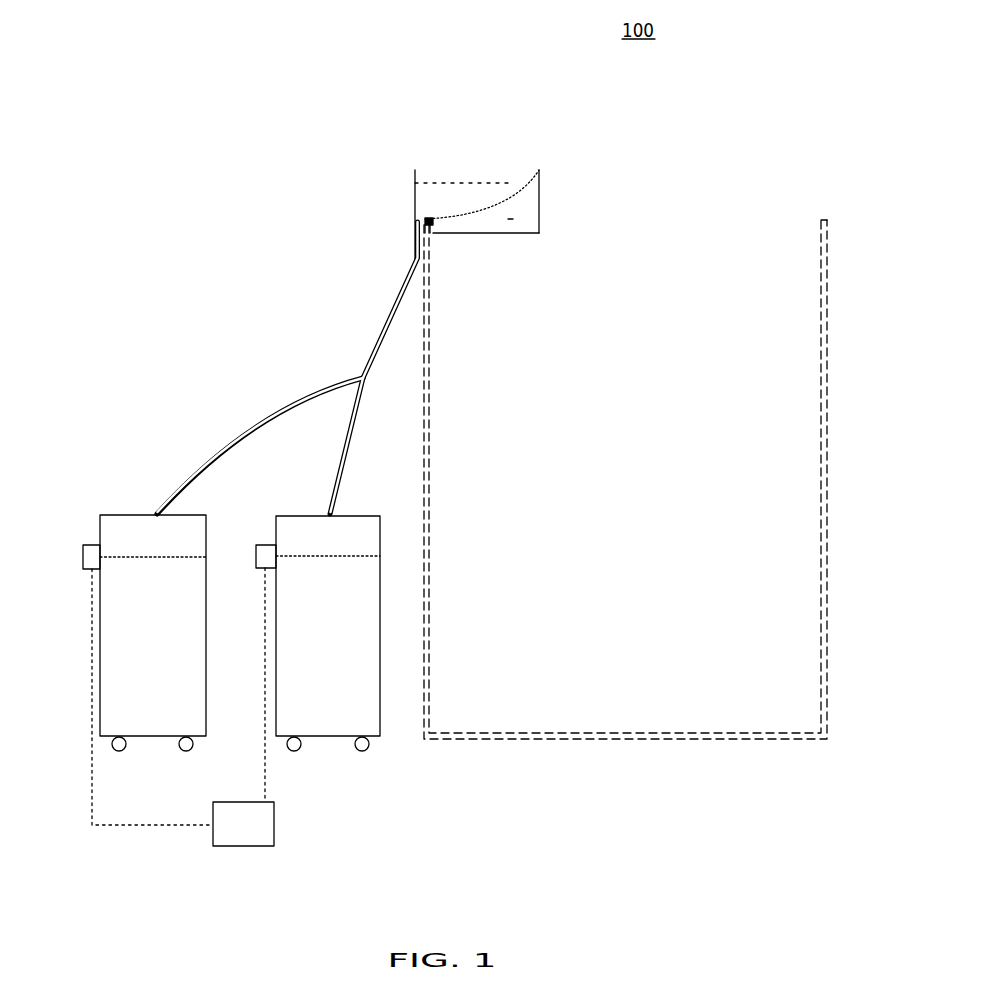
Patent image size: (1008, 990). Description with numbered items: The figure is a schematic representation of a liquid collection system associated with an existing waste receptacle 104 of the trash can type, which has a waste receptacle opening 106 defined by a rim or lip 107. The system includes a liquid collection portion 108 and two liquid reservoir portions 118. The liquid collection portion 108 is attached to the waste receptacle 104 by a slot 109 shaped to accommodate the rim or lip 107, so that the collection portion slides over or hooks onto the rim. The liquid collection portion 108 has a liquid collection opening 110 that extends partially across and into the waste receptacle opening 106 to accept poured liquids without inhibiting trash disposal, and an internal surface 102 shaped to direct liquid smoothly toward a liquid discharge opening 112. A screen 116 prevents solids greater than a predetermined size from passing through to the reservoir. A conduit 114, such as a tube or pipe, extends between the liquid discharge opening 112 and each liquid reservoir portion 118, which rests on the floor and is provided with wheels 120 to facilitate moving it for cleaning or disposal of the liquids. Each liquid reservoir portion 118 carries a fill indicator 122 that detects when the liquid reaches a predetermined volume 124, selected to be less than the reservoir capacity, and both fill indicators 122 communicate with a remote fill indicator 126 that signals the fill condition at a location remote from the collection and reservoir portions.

The internal surface 102 is at (497, 203).
The waste receptacle 104 is at (566, 742).
The waste receptacle opening 106 is at (692, 220).
The rim or lip 107 is at (824, 220).
The liquid collection portion 108 is at (412, 182).
The slot 109 is at (433, 225).
The liquid collection opening 110 is at (450, 170).
The liquid discharge opening 112 is at (415, 225).
The conduit 114 is at (370, 356).
The screen 116 is at (510, 183).
The liquid reservoir portion 118 is at (151, 510).
The wheels 120 is at (121, 752).
The fill indicator 122 is at (92, 545).
The predetermined volume 124 is at (127, 555).
The remote fill indicator 126 is at (274, 824).